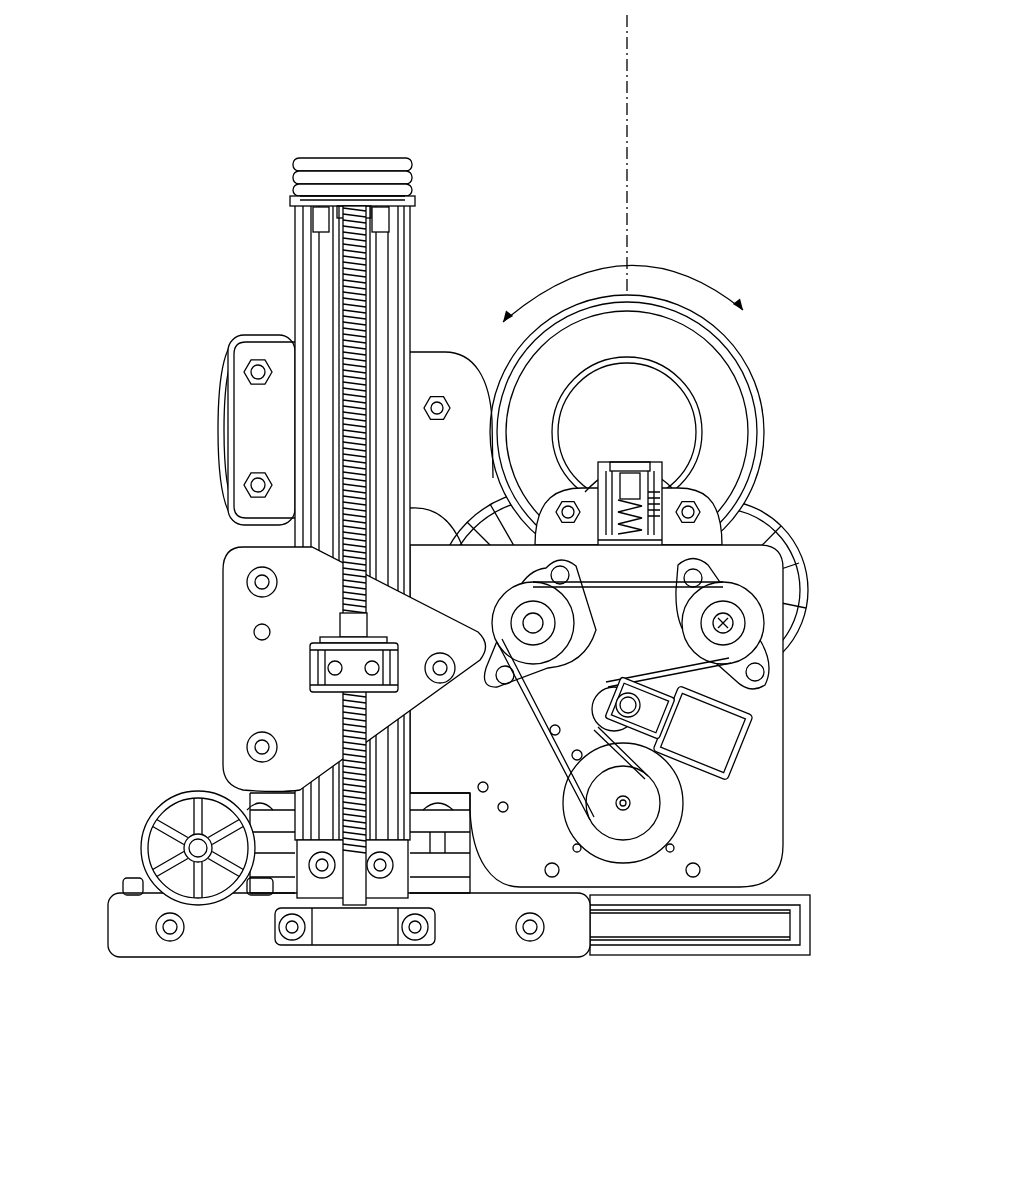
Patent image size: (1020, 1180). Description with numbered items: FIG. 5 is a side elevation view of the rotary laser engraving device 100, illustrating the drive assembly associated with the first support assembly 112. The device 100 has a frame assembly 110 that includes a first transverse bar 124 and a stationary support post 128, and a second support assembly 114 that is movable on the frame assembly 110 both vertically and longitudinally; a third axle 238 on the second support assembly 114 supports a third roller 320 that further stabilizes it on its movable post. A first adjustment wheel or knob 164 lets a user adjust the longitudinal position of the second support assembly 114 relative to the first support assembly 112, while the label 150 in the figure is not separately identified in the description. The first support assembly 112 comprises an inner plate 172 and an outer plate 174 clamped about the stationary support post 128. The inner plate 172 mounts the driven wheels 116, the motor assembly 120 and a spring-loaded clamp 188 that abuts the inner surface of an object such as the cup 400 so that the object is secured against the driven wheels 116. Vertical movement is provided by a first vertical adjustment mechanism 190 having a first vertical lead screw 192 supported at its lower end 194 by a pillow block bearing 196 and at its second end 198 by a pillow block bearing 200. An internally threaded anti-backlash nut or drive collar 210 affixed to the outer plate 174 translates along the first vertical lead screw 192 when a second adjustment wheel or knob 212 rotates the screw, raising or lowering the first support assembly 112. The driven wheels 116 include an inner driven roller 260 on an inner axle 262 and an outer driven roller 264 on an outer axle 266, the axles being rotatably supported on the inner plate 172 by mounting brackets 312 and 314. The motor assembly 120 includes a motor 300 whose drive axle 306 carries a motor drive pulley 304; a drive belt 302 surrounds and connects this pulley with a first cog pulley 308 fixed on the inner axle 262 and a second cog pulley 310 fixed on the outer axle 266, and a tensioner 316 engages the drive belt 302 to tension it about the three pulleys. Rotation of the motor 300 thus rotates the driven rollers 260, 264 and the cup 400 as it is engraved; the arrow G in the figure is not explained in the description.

The rotary laser engraving device 100 is at (203, 130).
The frame assembly 110 is at (108, 915).
The first support assembly 112 is at (128, 673).
The second support assembly 114 is at (202, 414).
The driven rollers 116 is at (822, 470).
The motor assembly 120 is at (840, 737).
The first transverse bar 124 is at (763, 955).
The stationary support post 128 is at (292, 265).
The wheel assembly 150 is at (112, 850).
The first adjustment wheel or knob 164 is at (153, 815).
The inner plate 172 is at (767, 845).
The outer plate 174 is at (232, 608).
The spring-loaded clamp 188 is at (633, 445).
The first vertical adjustment mechanism 190 is at (322, 134).
The first vertical lead screw 192 is at (365, 273).
The first or lower end 194 is at (341, 890).
The pillow block bearing 196 is at (355, 930).
The second end 198 is at (343, 216).
The pillow block bearing 200 is at (330, 205).
The anti-backlash nut or drive collar 210 is at (337, 627).
The second adjustment wheel or knob 212 is at (412, 168).
The third axle 238 is at (256, 485).
The inner driven roller 260 is at (490, 492).
The inner axle 262 is at (528, 622).
The outer driven roller 264 is at (797, 520).
The outer axle 266 is at (730, 632).
The motor 300 is at (675, 815).
The drive belt 302 is at (530, 720).
The motor drive pulley 304 is at (638, 818).
The drive axle 306 is at (622, 805).
The first cog pulley 308 is at (567, 627).
The second cog pulley 310 is at (745, 603).
The mounting bracket 312 is at (543, 575).
The mounting bracket 314 is at (758, 657).
The tensioner 316 is at (723, 742).
The third roller 320 is at (233, 507).
The cup 400 is at (737, 355).
The rotation direction G is at (623, 279).